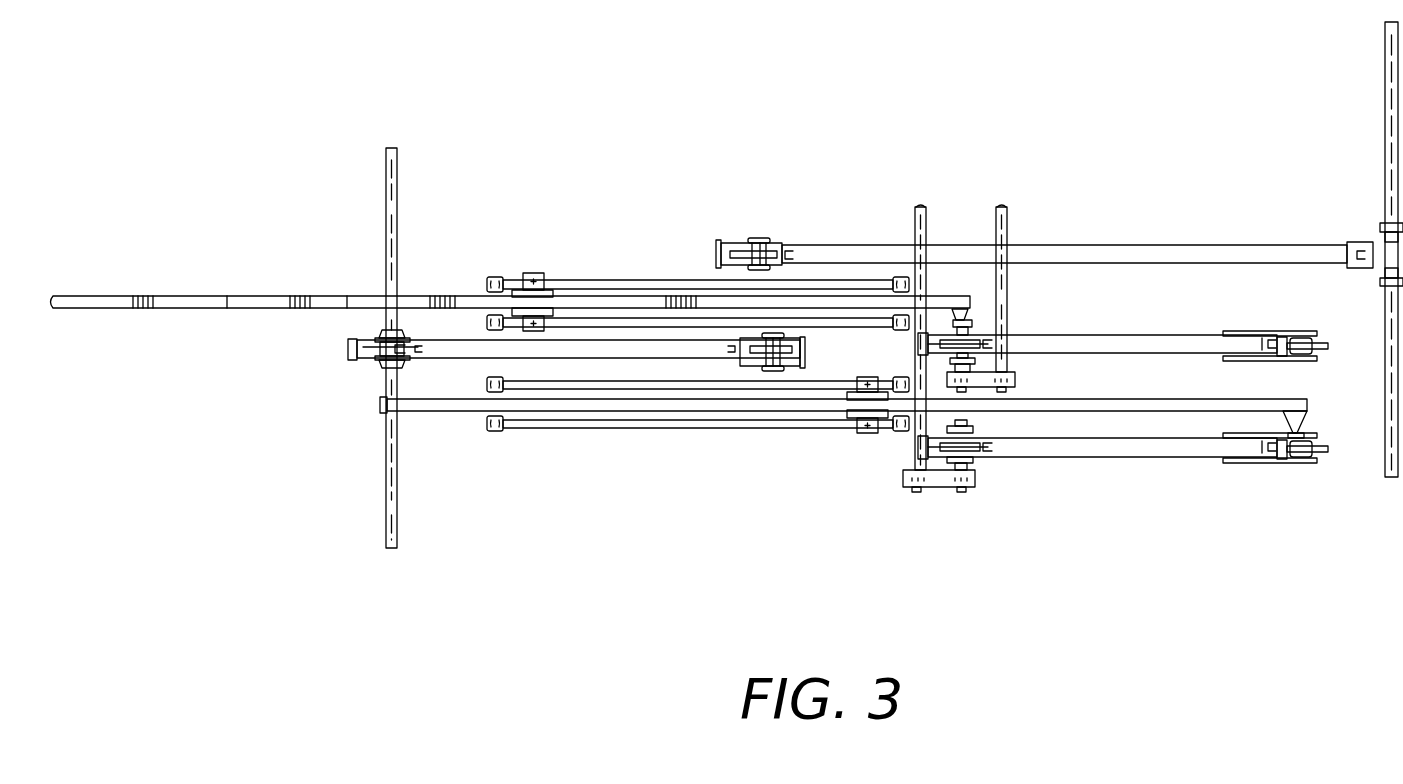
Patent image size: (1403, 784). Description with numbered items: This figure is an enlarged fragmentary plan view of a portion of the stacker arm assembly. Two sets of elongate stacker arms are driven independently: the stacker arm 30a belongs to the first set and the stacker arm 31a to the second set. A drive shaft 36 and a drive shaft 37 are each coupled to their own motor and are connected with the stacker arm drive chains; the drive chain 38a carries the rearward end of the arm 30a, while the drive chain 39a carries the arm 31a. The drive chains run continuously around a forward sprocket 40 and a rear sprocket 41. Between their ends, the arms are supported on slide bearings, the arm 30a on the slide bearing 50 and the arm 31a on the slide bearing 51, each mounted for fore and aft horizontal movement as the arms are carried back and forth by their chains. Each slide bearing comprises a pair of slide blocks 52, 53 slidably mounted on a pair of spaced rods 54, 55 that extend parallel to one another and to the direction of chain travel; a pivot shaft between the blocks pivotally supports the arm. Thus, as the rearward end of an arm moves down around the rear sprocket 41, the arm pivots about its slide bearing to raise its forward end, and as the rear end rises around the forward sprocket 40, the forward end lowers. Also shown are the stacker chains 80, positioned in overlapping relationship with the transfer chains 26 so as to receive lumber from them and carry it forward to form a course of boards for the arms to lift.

The transfer chain 26 is at (1157, 245).
The stacker arm 30a is at (410, 407).
The stacker arm 31a is at (196, 309).
The drive shaft 36 is at (924, 202).
The drive shaft 37 is at (1008, 202).
The stacker arm drive chain 38a is at (1072, 458).
The stacker arm drive chain 39a is at (1148, 355).
The forward sprocket 40 is at (996, 458).
The rear sprocket 41 is at (1323, 450).
The slide bearing 50 is at (852, 440).
The slide bearing 51 is at (537, 270).
The slide block 52 is at (520, 328).
The slide block 53 is at (524, 274).
The rod 54 is at (590, 326).
The rod 55 is at (645, 280).
The stacker chain 80 is at (470, 360).